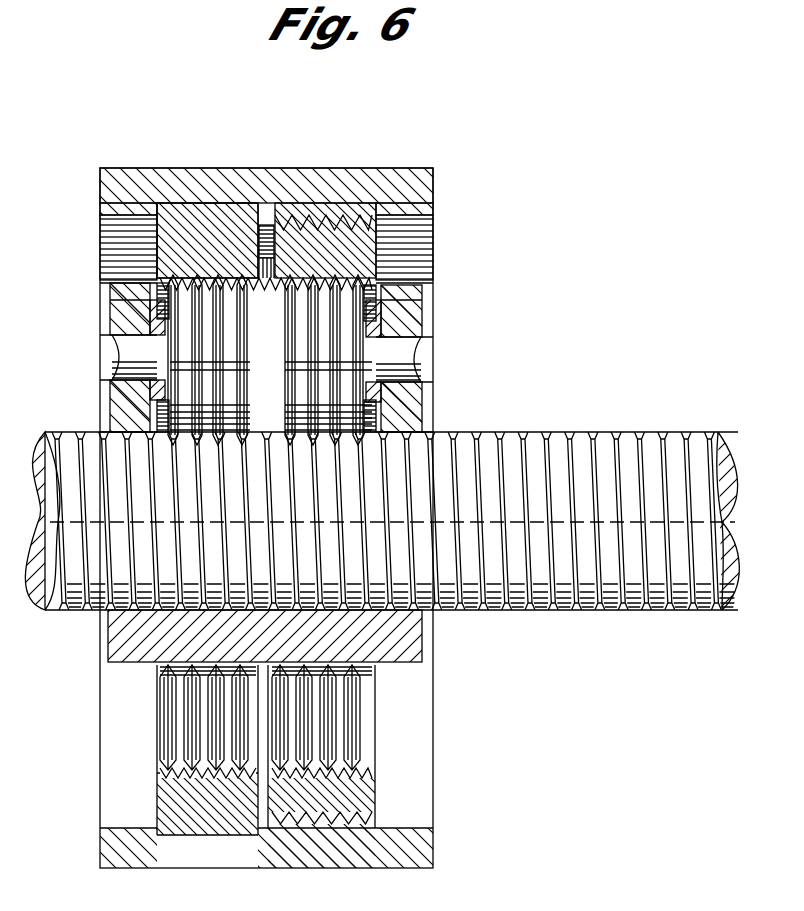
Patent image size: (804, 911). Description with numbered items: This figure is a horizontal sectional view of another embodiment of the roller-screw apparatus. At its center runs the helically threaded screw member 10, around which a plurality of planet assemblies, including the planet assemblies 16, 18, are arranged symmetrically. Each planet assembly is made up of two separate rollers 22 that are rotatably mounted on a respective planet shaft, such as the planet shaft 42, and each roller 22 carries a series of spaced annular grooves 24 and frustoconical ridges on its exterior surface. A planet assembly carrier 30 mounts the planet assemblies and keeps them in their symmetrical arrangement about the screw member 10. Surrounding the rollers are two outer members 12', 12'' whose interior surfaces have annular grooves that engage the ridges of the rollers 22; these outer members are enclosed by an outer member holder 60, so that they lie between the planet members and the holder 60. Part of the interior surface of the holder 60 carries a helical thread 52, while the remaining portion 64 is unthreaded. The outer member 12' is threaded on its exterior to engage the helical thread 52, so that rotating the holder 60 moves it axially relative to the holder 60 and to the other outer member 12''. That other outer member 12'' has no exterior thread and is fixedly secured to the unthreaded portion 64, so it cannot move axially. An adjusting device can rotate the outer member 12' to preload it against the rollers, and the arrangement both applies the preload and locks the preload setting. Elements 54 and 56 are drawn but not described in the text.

The helically threaded screw member 10 is at (738, 434).
The outer member 12' is at (321, 208).
The outer member 12'' is at (208, 202).
The planet assembly 16 is at (392, 752).
The planet assembly 18 is at (386, 278).
The roller 22 is at (112, 295).
The annular groove 24 is at (150, 419).
The planet assembly carrier 30 is at (408, 312).
The planet shaft 42 is at (408, 355).
The helical thread 52 is at (264, 230).
The spring washer 54 is at (378, 240).
The spacer ring 56 is at (378, 326).
The outer member holder 60 is at (305, 195).
The unthreaded portion of the interior surface 64 is at (194, 220).